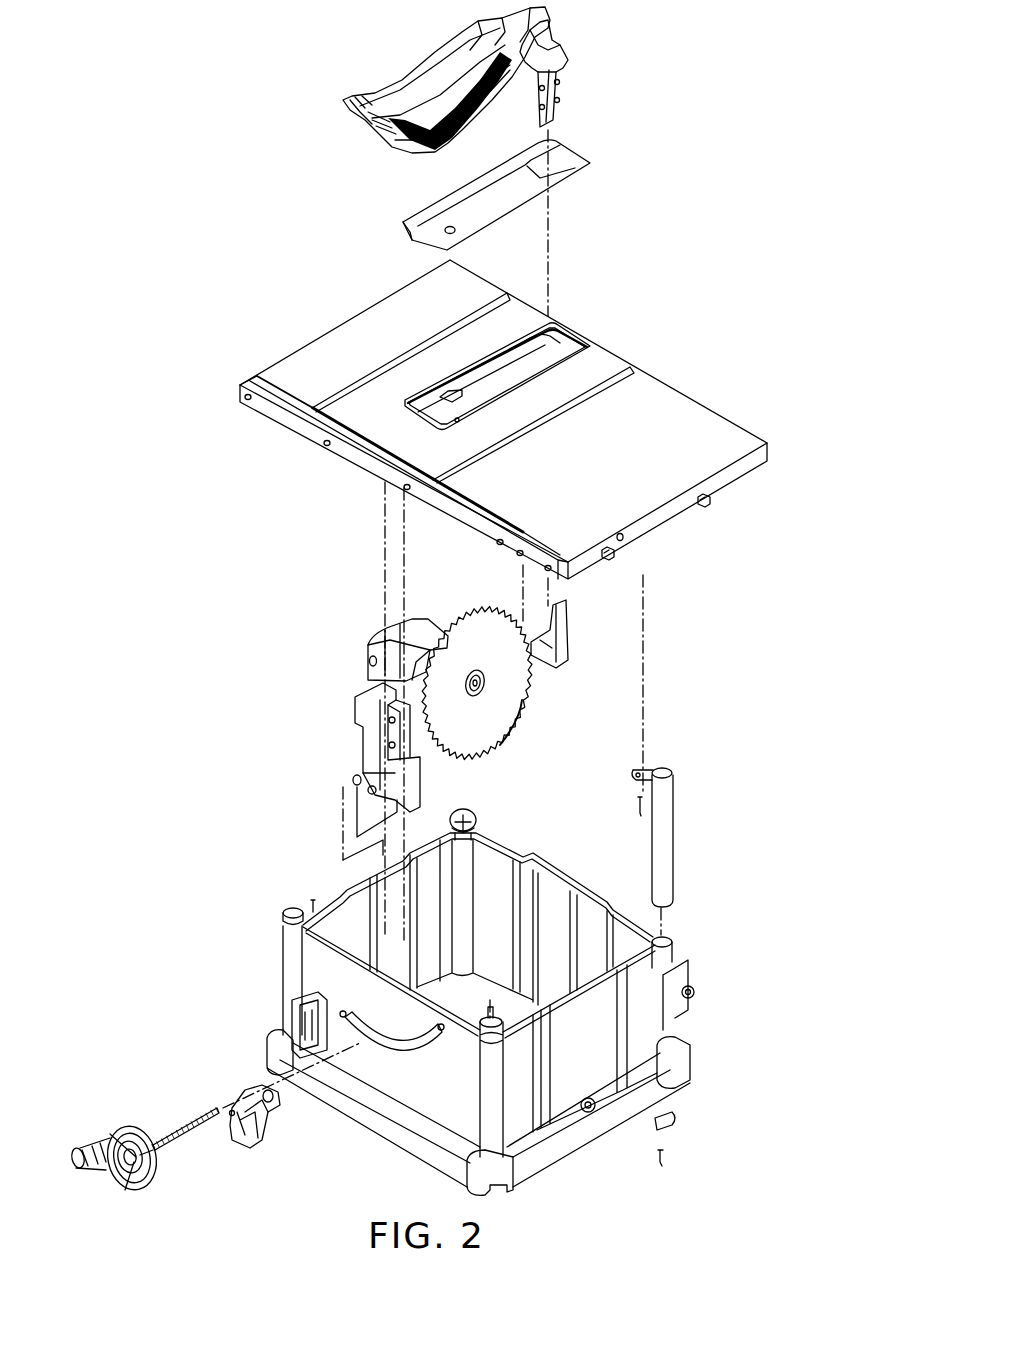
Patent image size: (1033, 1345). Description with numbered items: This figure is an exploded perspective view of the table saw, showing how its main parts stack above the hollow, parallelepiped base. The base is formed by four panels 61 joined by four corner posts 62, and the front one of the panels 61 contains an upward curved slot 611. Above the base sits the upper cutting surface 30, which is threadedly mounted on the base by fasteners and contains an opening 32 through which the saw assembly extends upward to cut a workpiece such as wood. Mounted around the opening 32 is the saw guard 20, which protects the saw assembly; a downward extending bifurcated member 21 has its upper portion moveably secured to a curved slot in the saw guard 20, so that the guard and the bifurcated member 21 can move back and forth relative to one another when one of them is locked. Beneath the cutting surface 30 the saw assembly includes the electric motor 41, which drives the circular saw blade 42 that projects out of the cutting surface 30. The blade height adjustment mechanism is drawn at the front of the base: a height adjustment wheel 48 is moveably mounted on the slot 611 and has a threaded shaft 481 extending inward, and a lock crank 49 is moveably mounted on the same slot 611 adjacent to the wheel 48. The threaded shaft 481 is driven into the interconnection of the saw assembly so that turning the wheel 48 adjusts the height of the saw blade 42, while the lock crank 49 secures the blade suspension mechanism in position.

The saw guard 20 is at (480, 43).
The bifurcated member 21 is at (563, 78).
The cutting surface 30 is at (627, 407).
The opening 32 is at (560, 353).
The electric motor 41 is at (367, 642).
The circular saw blade 42 is at (502, 693).
The height adjustment wheel 48 is at (107, 1133).
The threaded shaft 481 is at (197, 1117).
The lock crank 49 is at (257, 1133).
The panels 61 is at (545, 918).
The upward curved slot 611 is at (400, 1045).
The corner posts 62 is at (463, 813).